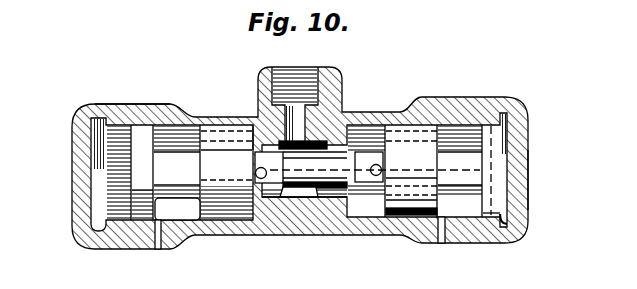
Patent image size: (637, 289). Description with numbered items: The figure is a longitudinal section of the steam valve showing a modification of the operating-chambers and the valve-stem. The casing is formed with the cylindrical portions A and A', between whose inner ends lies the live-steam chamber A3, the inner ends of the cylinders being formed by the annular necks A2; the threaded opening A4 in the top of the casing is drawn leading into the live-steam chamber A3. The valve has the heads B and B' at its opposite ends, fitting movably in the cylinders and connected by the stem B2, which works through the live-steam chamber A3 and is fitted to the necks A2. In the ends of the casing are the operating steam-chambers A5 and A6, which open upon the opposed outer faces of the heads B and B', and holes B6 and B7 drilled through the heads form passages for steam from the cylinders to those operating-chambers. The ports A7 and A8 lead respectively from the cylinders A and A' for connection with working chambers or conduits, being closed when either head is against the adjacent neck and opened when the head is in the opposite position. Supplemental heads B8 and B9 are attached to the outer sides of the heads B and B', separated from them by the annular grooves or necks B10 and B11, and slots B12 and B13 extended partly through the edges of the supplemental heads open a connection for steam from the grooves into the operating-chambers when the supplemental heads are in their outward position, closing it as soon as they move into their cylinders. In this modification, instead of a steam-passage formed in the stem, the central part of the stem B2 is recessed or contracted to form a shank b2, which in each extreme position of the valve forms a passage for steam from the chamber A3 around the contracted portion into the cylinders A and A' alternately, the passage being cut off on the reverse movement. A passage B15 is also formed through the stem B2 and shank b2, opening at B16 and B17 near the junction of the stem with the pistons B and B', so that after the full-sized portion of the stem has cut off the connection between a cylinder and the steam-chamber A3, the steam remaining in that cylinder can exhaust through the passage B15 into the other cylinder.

The cylindrical portion A is at (300, 158).
The cylindrical portion A' is at (177, 209).
The annular neck A2 is at (330, 194).
The live-steam chamber A3 is at (310, 203).
The threaded inlet opening A4 is at (302, 120).
The operating steam-chamber A5 is at (527, 181).
The operating steam-chamber A6 is at (104, 180).
The port A7 is at (441, 243).
The port A8 is at (160, 246).
The head B is at (411, 173).
The head B' is at (158, 100).
The stem B2 is at (376, 164).
The shank b2 is at (335, 148).
The hole B6 is at (425, 151).
The hole B7 is at (209, 146).
The supplemental head B8 is at (498, 139).
The supplemental head B9 is at (142, 172).
The annular groove B10 is at (441, 151).
The annular groove B11 is at (177, 172).
The slot B12 is at (491, 219).
The slot B13 is at (139, 243).
The passage B15 is at (333, 160).
The opening B16 is at (389, 141).
The opening B17 is at (257, 128).